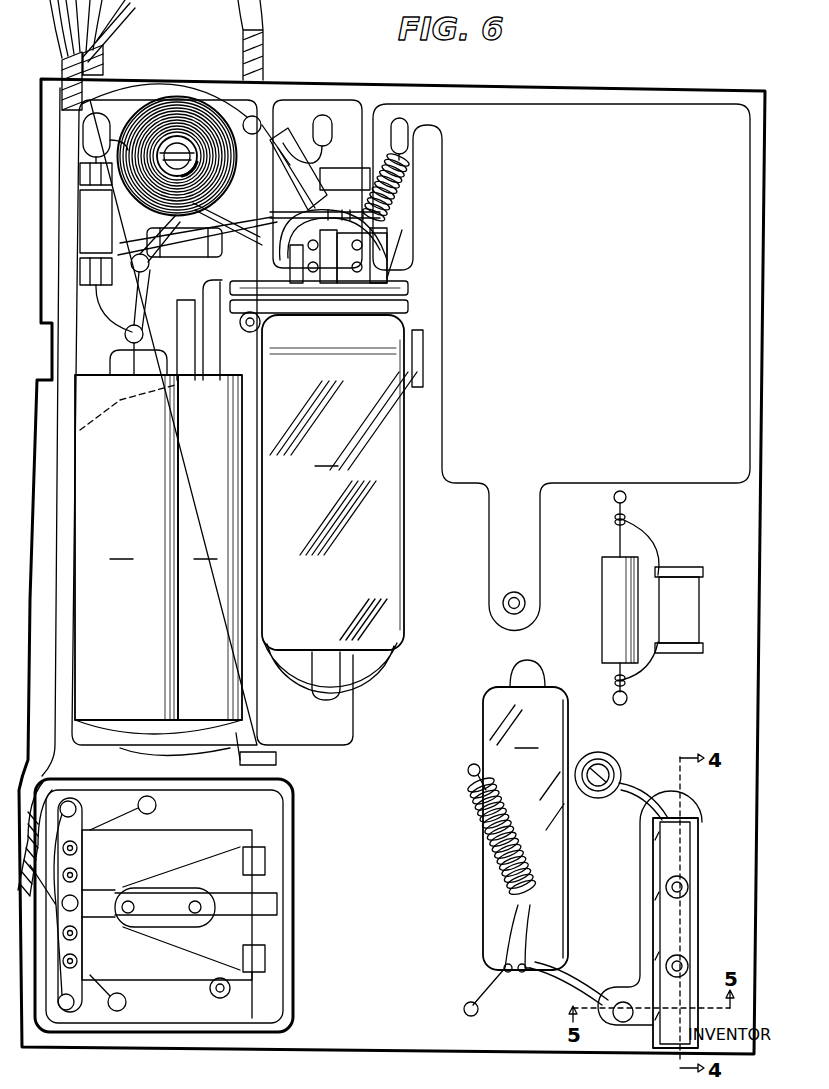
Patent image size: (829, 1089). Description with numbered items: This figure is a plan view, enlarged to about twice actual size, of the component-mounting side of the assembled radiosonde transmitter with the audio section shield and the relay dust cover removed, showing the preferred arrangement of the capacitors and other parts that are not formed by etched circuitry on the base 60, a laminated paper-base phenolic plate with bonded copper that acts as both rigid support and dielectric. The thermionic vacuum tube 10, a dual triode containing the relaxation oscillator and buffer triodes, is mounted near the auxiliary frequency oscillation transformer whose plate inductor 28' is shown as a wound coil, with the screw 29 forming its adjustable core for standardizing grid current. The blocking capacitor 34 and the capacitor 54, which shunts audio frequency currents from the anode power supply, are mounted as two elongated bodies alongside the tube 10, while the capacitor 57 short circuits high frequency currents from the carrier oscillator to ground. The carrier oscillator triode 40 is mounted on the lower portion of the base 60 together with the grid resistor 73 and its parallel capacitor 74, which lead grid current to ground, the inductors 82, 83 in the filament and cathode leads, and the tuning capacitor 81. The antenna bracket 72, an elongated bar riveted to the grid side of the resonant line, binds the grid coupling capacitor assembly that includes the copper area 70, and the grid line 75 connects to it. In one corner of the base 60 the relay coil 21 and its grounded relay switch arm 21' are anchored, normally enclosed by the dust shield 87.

The thermionic vacuum tube 10 is at (342, 507).
The relay coil 21 is at (173, 953).
The relay switch arm 21' is at (179, 982).
The plate inductor 28' is at (177, 125).
The screw 29 is at (176, 150).
The blocking capacitor 34 is at (126, 547).
The triode 40 is at (525, 815).
The capacitor 54 is at (210, 547).
The capacitor 57 is at (710, 143).
The base 60 is at (752, 546).
The copper area 70 is at (627, 986).
The antenna bracket 72 is at (688, 917).
The resistor 73 is at (612, 608).
The capacitor 74 is at (690, 610).
The grid line 75 is at (563, 993).
The tuning capacitor 81 is at (621, 766).
The inductor 82 is at (535, 903).
The inductor 83 is at (533, 888).
The dust shield 87 is at (290, 843).